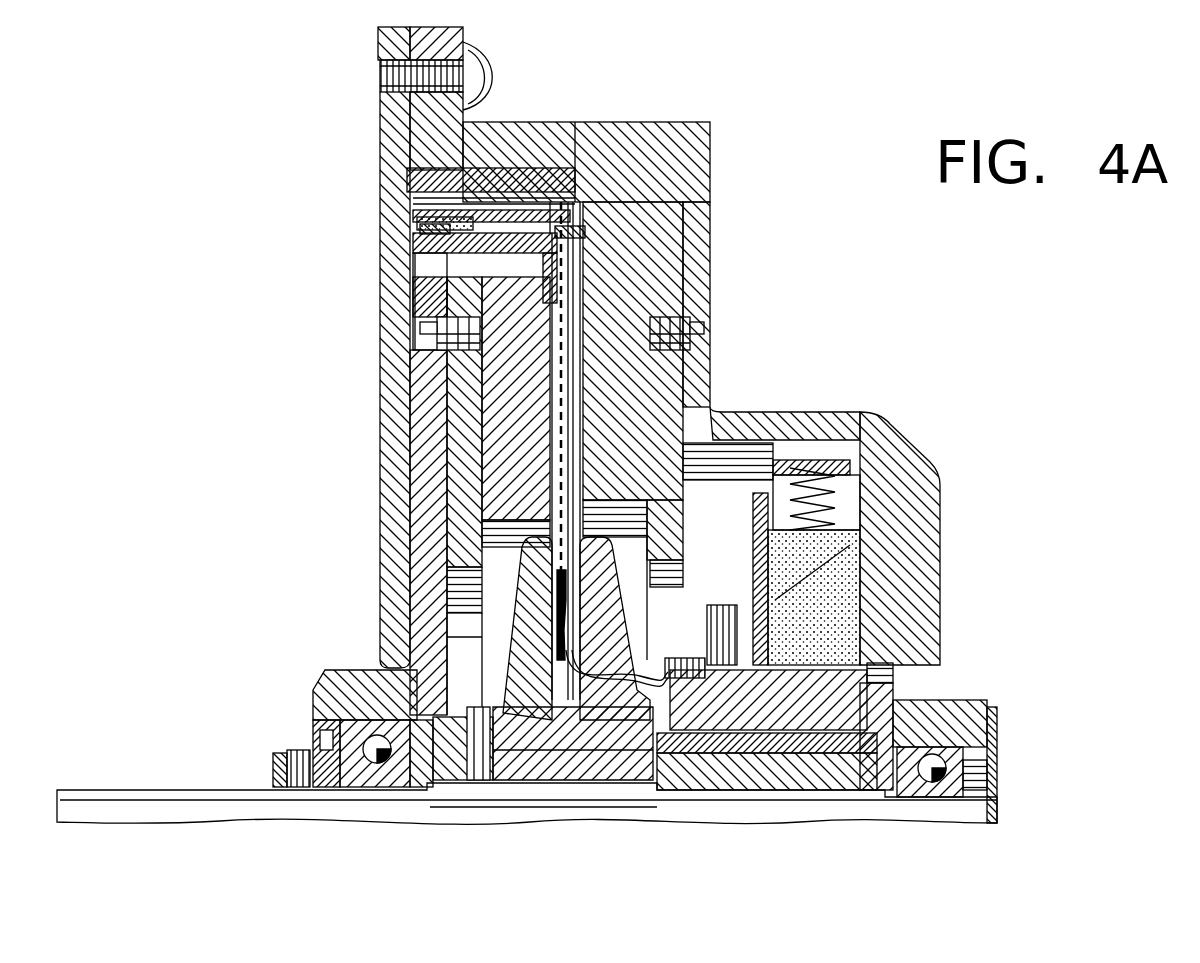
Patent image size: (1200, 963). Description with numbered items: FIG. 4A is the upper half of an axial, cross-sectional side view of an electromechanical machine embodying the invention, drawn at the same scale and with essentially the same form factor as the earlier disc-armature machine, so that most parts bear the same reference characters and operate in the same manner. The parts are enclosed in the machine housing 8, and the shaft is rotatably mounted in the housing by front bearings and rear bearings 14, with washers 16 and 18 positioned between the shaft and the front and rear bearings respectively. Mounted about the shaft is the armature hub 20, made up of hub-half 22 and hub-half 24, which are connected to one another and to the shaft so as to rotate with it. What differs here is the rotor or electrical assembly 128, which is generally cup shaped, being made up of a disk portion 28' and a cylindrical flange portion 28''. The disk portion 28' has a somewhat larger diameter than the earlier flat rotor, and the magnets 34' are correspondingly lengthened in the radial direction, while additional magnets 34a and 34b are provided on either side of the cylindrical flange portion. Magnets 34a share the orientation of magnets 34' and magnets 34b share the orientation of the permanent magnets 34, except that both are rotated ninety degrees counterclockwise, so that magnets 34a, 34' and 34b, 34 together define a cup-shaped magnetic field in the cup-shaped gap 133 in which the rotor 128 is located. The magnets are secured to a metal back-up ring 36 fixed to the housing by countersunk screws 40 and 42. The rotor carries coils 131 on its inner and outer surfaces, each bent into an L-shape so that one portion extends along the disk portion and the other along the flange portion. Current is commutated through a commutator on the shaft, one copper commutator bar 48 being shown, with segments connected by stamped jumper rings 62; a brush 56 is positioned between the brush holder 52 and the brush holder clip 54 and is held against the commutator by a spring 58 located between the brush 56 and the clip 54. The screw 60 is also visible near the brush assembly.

The machine housing 8 is at (832, 333).
The rear bearings 14 is at (933, 758).
The washer 16 is at (415, 720).
The washer 18 is at (858, 797).
The armature hub 20 is at (609, 511).
The hub-half 22 is at (600, 546).
The hub-half 24 is at (525, 600).
The disk portion 28' is at (658, 220).
The cylindrical flange portion 28'' is at (374, 221).
The permanent magnets 34 is at (511, 371).
The magnets 34' is at (677, 431).
The additional magnets 34a is at (418, 178).
The additional magnets 34b is at (415, 253).
The back-up ring 36 is at (455, 318).
The countersunk screw 40 is at (425, 328).
The countersunk screw 42 is at (700, 318).
The commutator bar 48 is at (790, 708).
The brush holder 52 is at (755, 495).
The brush holder clip 54 is at (865, 515).
The brush 56 is at (822, 645).
The spring 58 is at (850, 498).
The screw 60 is at (723, 602).
The stamped jumper rings 62 is at (816, 604).
The rotor 128 is at (513, 205).
The coils 131 is at (467, 218).
The cup-shaped gap 133 is at (562, 196).